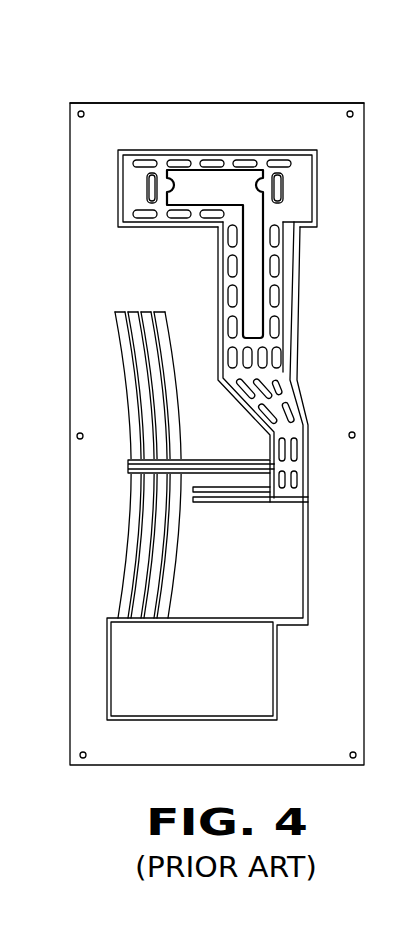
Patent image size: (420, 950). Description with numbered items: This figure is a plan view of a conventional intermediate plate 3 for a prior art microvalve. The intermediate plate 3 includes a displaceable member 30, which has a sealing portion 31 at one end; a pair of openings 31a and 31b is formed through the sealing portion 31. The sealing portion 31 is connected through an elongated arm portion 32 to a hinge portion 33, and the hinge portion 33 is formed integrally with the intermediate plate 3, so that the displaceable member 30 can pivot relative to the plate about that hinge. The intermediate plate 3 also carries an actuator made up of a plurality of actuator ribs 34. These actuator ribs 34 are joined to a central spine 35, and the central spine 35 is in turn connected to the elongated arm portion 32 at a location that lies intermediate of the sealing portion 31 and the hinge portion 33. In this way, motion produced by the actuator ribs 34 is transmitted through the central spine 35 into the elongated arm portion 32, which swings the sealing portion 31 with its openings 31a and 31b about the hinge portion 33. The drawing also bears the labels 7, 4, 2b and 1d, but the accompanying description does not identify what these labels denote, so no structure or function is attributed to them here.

The intermediate plate 3 is at (123, 102).
The back plate 7 is at (297, 123).
The displaceable member 30 is at (287, 260).
The sealing portion 31 is at (293, 177).
The opening 31a is at (150, 188).
The opening 31b is at (283, 197).
The elongated arm portion 32 is at (275, 345).
The hinge portion 33 is at (243, 500).
The actuator ribs 34 is at (132, 413).
The central spine 35 is at (232, 468).
The display panel 4 is at (412, 589).
The frame portion 2b is at (11, 152).
The frame portion 1d is at (13, 415).